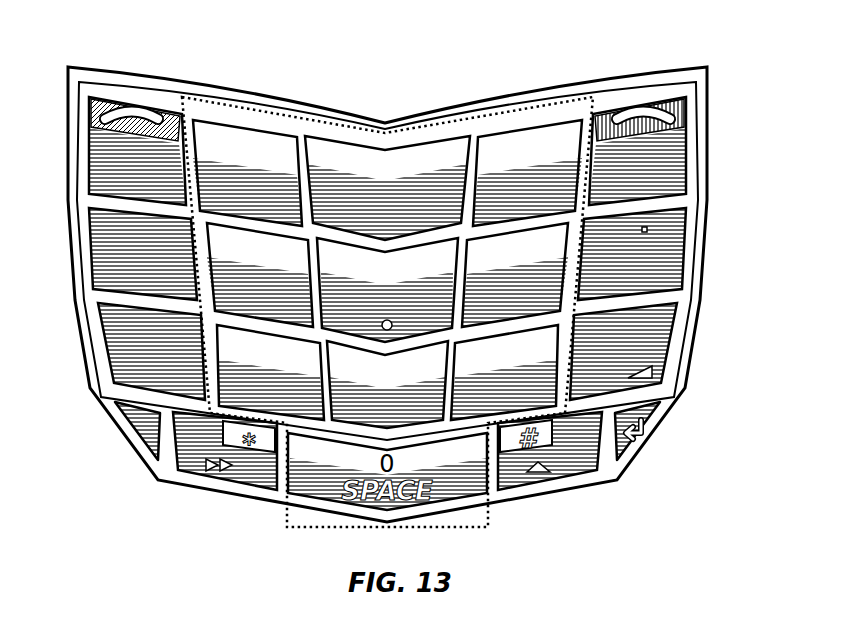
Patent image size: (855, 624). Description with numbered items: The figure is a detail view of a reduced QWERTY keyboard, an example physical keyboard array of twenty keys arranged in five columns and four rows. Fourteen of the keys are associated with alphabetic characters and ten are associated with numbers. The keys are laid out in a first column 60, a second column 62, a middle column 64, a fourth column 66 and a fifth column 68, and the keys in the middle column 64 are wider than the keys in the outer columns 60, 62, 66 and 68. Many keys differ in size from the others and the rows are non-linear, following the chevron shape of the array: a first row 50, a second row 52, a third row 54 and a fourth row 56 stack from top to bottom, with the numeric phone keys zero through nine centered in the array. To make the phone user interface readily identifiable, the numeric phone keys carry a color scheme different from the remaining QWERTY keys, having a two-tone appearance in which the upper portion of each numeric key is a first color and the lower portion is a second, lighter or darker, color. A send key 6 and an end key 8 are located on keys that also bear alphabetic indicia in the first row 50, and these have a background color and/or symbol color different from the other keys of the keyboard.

The send key 6 is at (90, 116).
The end key 8 is at (683, 113).
The first row 50 is at (681, 151).
The second row 52 is at (693, 244).
The third row 54 is at (683, 339).
The fourth row 56 is at (658, 422).
The first column 60 is at (112, 213).
The second column 62 is at (235, 117).
The middle column 64 is at (378, 142).
The fourth column 66 is at (540, 117).
The fifth column 68 is at (671, 206).